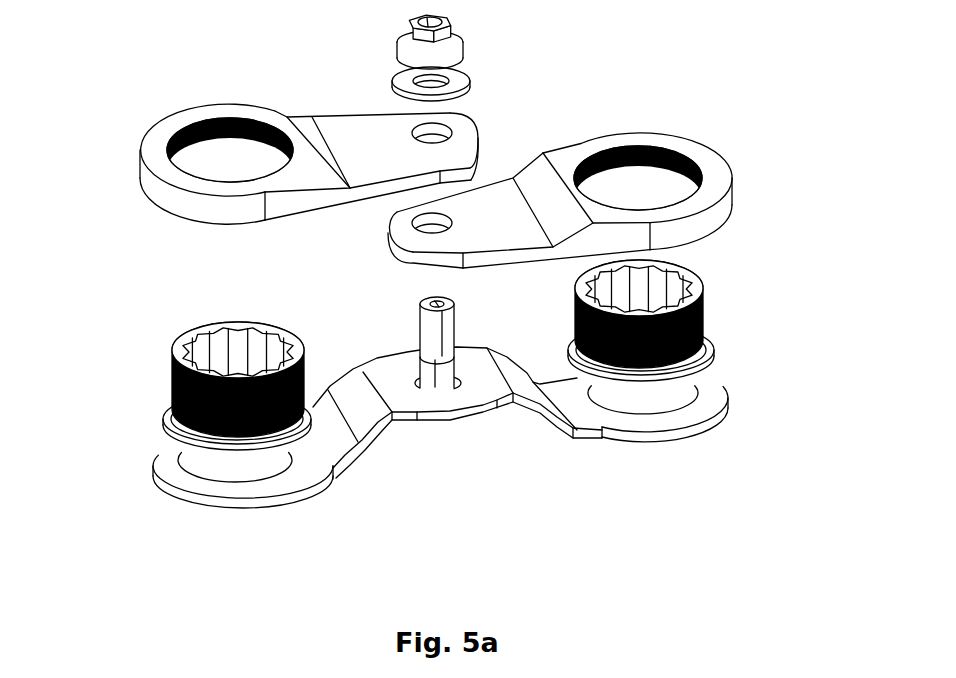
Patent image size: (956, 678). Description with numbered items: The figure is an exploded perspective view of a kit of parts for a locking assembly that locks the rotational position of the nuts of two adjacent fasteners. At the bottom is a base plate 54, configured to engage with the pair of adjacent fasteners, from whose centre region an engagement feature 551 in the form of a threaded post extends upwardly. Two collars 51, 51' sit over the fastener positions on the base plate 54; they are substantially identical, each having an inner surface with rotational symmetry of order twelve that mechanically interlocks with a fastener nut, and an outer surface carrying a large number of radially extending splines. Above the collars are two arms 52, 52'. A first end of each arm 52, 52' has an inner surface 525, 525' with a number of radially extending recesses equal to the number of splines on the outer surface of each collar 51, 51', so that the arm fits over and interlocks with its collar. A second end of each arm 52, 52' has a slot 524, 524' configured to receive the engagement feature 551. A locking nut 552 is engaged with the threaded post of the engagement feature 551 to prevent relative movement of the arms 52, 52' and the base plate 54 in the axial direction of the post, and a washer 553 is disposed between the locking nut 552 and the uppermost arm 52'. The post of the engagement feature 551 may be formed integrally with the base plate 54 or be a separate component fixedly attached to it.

The arm 52 is at (615, 181).
The arm 52' is at (258, 168).
The inner surface 525 is at (647, 162).
The inner surface 525' is at (207, 131).
The slot 524 is at (497, 172).
The slot 524' is at (355, 101).
The locking nut 552 is at (460, 28).
The washer 553 is at (458, 80).
The engagement feature 551 is at (420, 323).
The base plate 54 is at (680, 437).
The collar 51 is at (700, 314).
The collar 51' is at (179, 379).